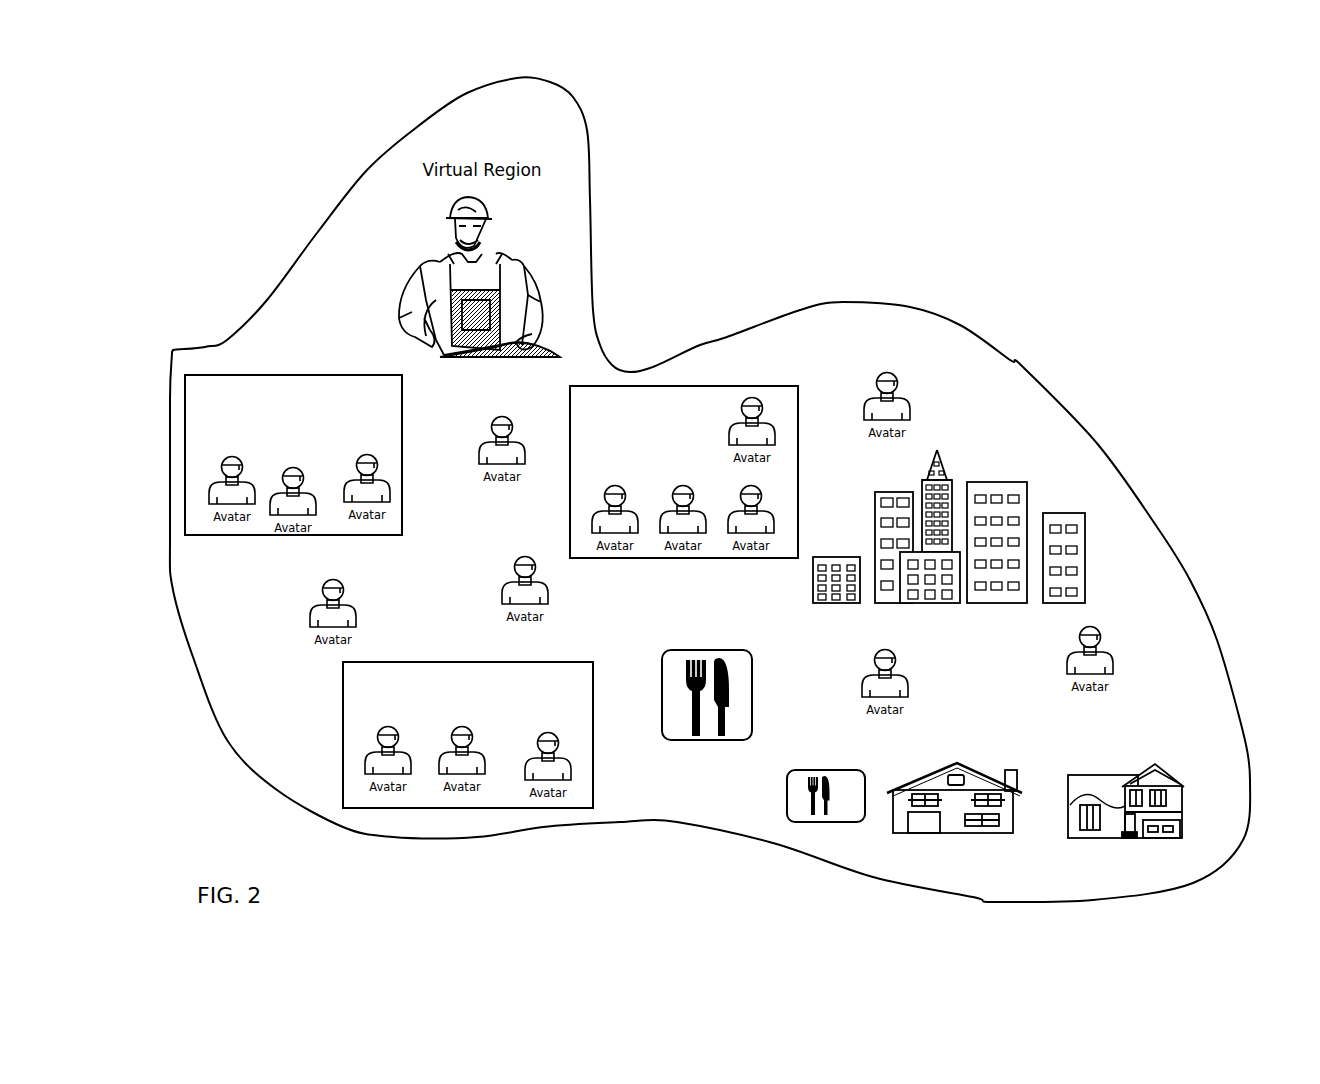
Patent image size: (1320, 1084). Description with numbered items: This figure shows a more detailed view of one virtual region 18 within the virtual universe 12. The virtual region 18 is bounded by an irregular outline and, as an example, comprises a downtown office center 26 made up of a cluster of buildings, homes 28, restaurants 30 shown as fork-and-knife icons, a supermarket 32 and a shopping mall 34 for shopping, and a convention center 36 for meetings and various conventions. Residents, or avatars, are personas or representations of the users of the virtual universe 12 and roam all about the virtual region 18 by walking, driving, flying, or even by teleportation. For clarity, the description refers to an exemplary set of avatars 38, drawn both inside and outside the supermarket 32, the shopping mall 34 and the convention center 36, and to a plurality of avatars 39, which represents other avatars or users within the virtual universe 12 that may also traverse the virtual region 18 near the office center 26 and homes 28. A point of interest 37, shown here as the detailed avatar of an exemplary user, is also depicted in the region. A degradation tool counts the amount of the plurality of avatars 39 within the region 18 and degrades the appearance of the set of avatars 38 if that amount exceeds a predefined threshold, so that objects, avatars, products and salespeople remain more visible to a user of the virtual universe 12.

The virtual universe 12 is at (962, 201).
The virtual region 18 is at (588, 140).
The downtown office center 26 is at (1022, 472).
The homes 28 is at (966, 833).
The restaurants 30 is at (752, 700).
The supermarket 32 is at (295, 374).
The shopping mall 34 is at (343, 735).
The convention center 36 is at (670, 559).
The point of interest 37 is at (500, 228).
The set of avatars 38 is at (347, 587).
The plurality of avatars 39 is at (898, 375).